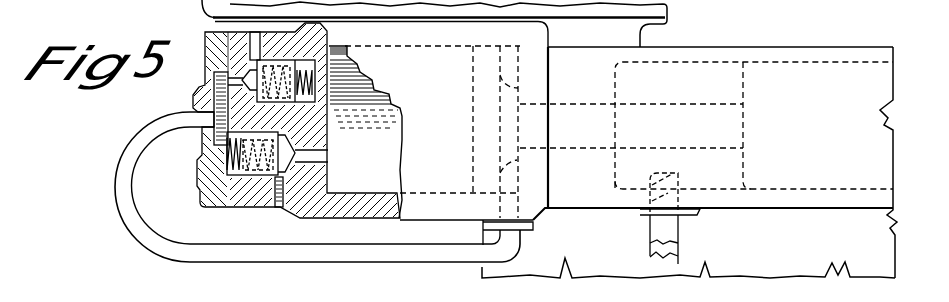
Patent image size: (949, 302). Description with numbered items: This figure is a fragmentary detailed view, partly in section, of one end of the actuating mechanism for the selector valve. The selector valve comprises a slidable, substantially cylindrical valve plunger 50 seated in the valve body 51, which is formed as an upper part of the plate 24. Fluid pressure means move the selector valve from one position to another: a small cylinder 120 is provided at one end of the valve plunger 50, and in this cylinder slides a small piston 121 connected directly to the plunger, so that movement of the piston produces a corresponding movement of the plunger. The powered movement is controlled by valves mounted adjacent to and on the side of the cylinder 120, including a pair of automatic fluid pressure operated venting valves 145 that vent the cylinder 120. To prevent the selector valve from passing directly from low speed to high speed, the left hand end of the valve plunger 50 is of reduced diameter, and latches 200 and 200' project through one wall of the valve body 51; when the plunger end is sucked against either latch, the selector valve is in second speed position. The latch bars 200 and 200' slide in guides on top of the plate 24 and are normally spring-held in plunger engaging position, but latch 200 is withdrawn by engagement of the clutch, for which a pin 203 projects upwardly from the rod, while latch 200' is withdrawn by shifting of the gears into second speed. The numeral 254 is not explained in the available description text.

The automatic fluid pressure operated venting valves 145 is at (203, 168).
The small cylinder 120 is at (382, 178).
The small piston 121 is at (473, 150).
The valve plunger 50 is at (813, 84).
The valve body 51 is at (725, 52).
The plate 24 is at (878, 255).
The latch 200 is at (690, 218).
The latch 200' is at (695, 251).
The cover plate 254 is at (496, 23).
The pin 203 is at (697, 122).